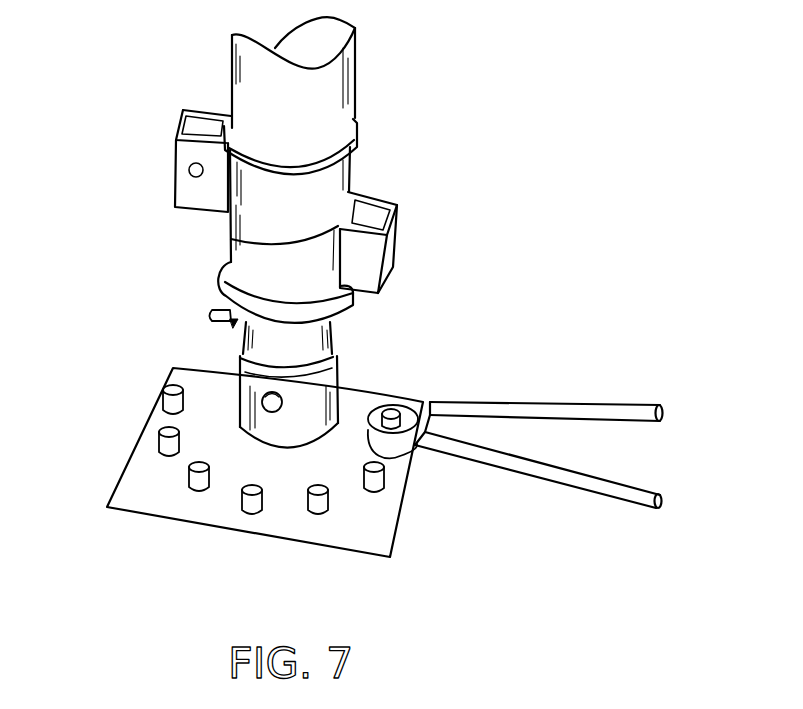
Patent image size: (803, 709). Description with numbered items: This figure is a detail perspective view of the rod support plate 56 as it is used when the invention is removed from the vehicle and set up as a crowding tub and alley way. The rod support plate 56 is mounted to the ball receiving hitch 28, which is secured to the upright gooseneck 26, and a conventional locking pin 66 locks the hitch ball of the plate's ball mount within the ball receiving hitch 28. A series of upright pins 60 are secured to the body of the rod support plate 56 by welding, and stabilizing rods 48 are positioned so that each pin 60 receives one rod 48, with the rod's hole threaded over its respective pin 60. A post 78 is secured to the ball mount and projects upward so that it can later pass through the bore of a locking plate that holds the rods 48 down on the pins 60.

The upright gooseneck 26 is at (330, 85).
The ball receiving hitch 28 is at (327, 333).
The stabilizing rods 48 is at (625, 405).
The rod support plate 56 is at (377, 540).
The upright pins 60 is at (165, 405).
The locking pin 66 is at (215, 320).
The post 78 is at (282, 403).